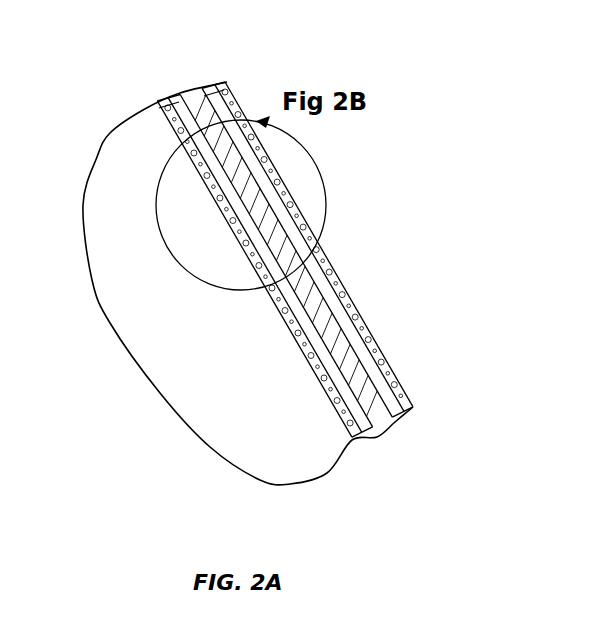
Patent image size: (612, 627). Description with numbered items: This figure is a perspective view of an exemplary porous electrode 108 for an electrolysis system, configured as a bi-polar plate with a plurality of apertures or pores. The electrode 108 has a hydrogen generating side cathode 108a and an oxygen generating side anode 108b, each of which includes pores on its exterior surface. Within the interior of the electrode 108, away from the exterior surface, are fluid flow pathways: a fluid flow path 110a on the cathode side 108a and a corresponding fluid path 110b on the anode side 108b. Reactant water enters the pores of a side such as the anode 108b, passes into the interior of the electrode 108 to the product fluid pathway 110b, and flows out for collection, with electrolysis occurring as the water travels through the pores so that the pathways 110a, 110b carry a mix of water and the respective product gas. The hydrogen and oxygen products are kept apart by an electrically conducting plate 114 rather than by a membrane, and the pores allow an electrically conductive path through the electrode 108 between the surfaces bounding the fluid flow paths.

The electrode 108 is at (438, 150).
The hydrogen generating side cathode 108a is at (238, 93).
The oxygen generating side anode 108b is at (182, 122).
The fluid flow path 110a is at (212, 78).
The fluid path 110b is at (147, 94).
The electrically conducting plate 114 is at (205, 116).